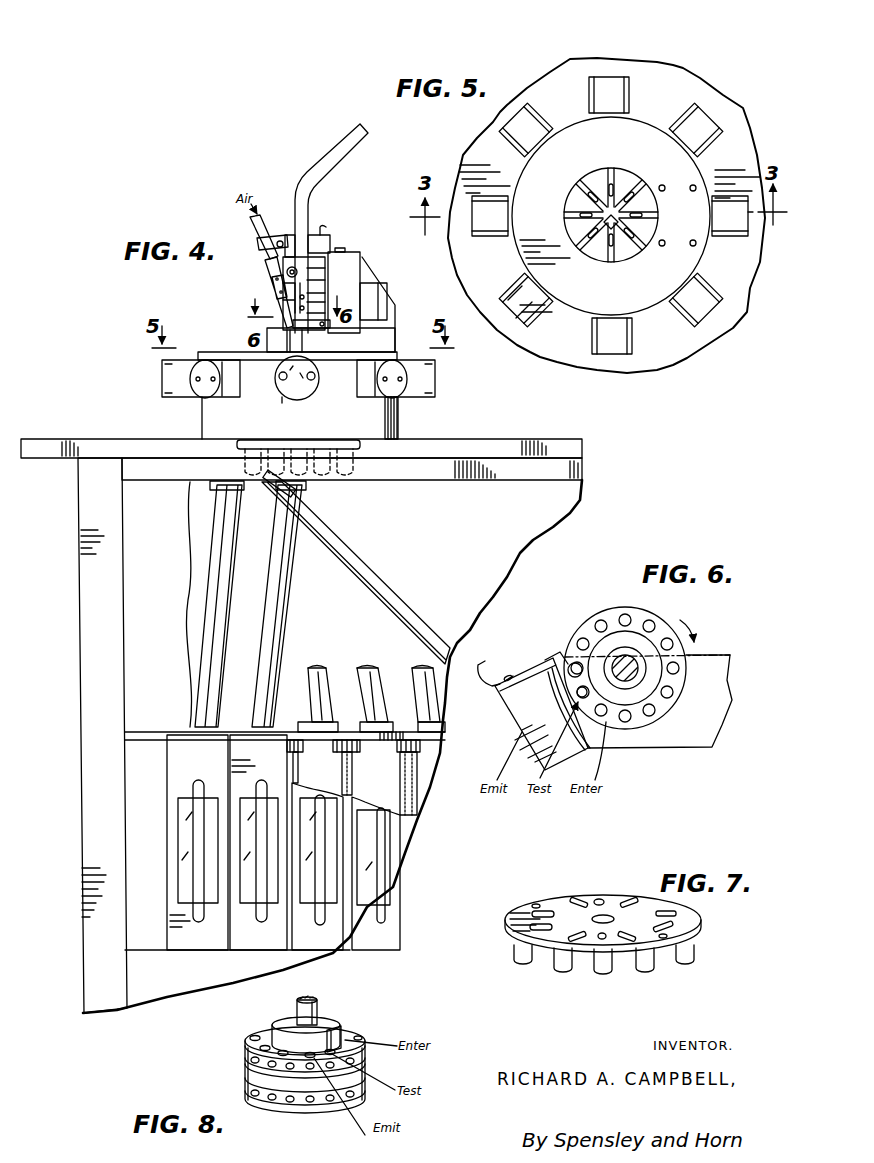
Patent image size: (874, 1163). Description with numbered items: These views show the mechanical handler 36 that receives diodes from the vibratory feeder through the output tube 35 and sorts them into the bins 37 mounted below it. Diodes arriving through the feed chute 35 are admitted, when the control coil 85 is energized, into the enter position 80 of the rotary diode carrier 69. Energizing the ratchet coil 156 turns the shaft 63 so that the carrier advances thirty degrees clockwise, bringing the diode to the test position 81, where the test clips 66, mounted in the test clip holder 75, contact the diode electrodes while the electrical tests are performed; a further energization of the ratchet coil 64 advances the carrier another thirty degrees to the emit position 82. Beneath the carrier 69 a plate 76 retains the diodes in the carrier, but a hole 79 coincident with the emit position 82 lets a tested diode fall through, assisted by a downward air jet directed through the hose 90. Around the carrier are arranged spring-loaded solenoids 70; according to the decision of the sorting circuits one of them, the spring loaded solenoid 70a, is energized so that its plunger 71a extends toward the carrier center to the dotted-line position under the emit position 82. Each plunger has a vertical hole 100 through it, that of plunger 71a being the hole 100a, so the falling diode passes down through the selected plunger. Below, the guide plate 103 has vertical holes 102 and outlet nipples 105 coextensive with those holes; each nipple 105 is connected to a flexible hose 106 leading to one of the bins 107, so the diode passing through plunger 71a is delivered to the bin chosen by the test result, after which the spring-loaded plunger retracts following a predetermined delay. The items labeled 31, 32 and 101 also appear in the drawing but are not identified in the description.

In FIG. 4, the table top 31 is at (100, 440).
In FIG. 4, the machine frame 32 is at (75, 970).
In FIG. 4, the output tube 35 is at (309, 198).
In FIG. 4, the mechanical handler 36 is at (226, 318).
In FIG. 5, the mechanical handler 36 is at (492, 286).
In FIG. 4, the bins 37 is at (203, 935).
In FIG. 6, the shaft 63 is at (628, 660).
In FIG. 8, the shaft 63 is at (312, 1008).
In FIG. 4, the ratchet coil 64 is at (290, 240).
In FIG. 6, the test clips 66 is at (560, 668).
In FIG. 6, the diode carrier 69 is at (618, 600).
In FIG. 8, the diode carrier 69 is at (372, 1033).
In FIG. 4, the solenoids 70 is at (168, 384).
In FIG. 5, the solenoids 70 is at (621, 78).
In FIG. 5, the spring loaded solenoid 70a is at (541, 318).
In FIG. 5, the plunger 71a is at (596, 262).
In FIG. 6, the test clip holder 75 is at (706, 707).
In FIG. 6, the plate 76 is at (724, 655).
In FIG. 6, the hole 79 is at (581, 638).
In FIG. 6, the enter position 80 is at (603, 717).
In FIG. 8, the enter position 80 is at (334, 1052).
In FIG. 6, the test position 81 is at (582, 698).
In FIG. 8, the test position 81 is at (336, 1026).
In FIG. 6, the emit position 82 is at (533, 714).
In FIG. 8, the emit position 82 is at (308, 1058).
In FIG. 4, the control coil 85 is at (381, 300).
In FIG. 4, the hose 90 is at (275, 308).
In FIG. 6, the hose 90 is at (566, 655).
In FIG. 5, the vertical hole 100 is at (604, 180).
In FIG. 5, the hole 100a is at (612, 262).
In FIG. 4, the column 101 is at (391, 432).
In FIG. 7, the holes 102 is at (602, 940).
In FIG. 4, the guide plate 103 is at (290, 452).
In FIG. 7, the guide plate 103 is at (695, 929).
In FIG. 4, the outlet nipples 105 is at (345, 480).
In FIG. 7, the outlet nipples 105 is at (526, 962).
In FIG. 4, the flexible hoses 106 is at (375, 577).
In FIG. 4, the bins 107 is at (82, 735).
In FIG. 4, the ratchet coil 156 is at (323, 243).